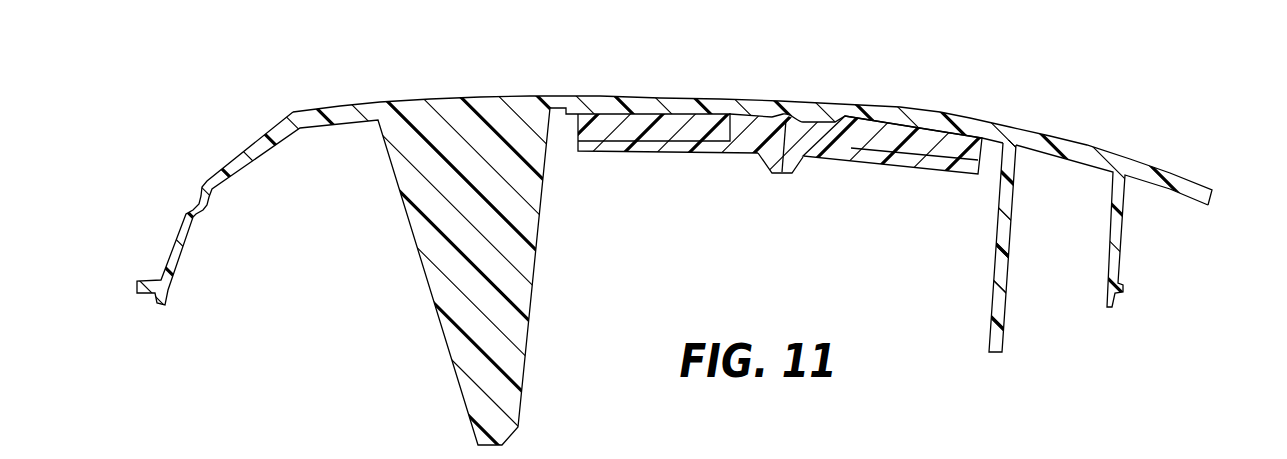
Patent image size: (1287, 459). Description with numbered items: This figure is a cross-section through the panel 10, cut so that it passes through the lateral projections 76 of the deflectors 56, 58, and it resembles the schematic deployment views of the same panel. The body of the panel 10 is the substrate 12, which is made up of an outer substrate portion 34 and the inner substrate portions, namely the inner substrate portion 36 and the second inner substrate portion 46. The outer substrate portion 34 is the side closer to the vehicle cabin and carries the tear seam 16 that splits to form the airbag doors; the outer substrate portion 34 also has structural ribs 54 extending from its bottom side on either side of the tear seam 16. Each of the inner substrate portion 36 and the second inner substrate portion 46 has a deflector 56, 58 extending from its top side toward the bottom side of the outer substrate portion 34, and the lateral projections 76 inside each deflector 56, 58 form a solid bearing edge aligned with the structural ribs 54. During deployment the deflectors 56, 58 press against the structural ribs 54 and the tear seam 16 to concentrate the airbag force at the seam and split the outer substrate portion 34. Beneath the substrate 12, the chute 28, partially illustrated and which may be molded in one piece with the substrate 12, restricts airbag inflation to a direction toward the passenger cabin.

The panel 10 is at (1147, 62).
The substrate 12 is at (1032, 130).
The tear seam 16 is at (786, 120).
The chute 28 is at (1003, 295).
The outer substrate portion 34 is at (890, 107).
The inner substrate portion 36 is at (905, 167).
The second inner substrate portion 46 is at (643, 152).
The structural ribs 54 is at (675, 120).
The deflector 56 is at (803, 157).
The deflector 58 is at (738, 147).
The lateral projections 76 is at (739, 120).